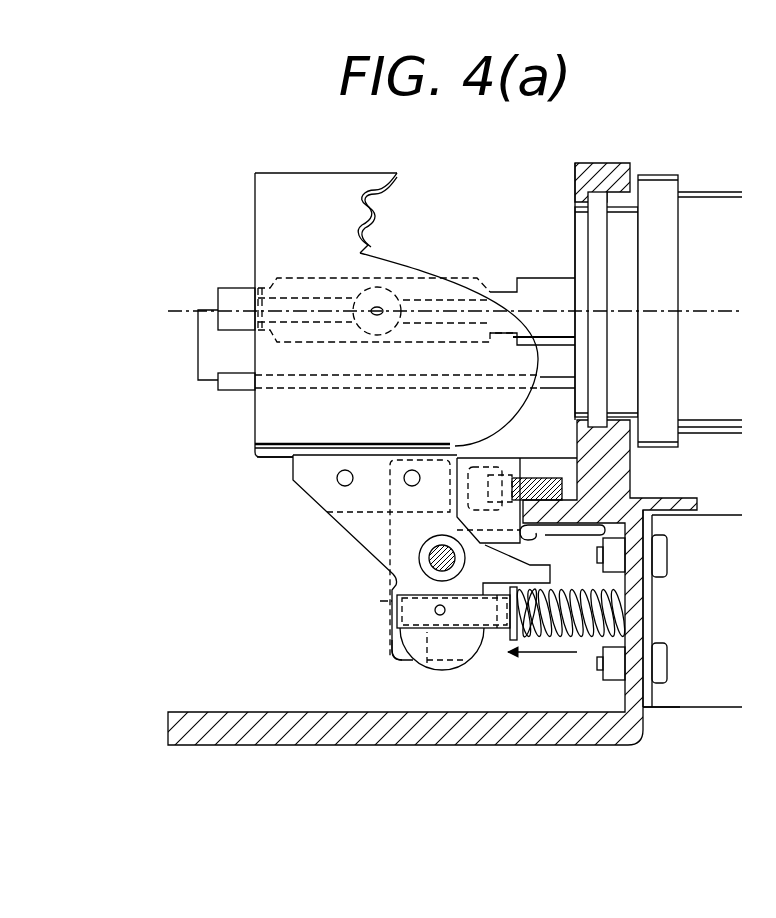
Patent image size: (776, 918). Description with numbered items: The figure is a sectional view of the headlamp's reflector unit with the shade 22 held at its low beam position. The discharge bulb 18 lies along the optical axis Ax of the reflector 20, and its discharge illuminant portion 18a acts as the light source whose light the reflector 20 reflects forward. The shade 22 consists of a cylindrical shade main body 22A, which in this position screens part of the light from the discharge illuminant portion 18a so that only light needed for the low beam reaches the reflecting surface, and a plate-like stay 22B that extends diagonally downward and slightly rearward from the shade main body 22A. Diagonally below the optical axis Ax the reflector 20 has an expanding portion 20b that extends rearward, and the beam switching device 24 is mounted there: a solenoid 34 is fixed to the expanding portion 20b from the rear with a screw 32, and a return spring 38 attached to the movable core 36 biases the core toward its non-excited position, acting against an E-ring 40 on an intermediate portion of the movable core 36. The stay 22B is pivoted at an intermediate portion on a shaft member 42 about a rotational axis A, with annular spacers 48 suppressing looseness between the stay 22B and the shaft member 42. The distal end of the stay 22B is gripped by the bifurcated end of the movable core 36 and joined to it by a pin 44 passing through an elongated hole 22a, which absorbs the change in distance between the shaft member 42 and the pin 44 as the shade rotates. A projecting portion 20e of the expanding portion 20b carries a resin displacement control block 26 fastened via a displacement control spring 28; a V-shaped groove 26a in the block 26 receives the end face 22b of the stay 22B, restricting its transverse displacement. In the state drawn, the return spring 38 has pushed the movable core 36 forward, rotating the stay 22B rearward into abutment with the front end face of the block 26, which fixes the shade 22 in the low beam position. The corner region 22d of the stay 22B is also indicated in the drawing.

The discharge bulb 18 is at (468, 274).
The discharge illuminant portion 18a is at (381, 306).
The optical axis Ax is at (183, 306).
The reflector 20 is at (460, 748).
The expanding portion 20b is at (640, 618).
The projecting portion 20e is at (553, 478).
The shade 22 is at (310, 496).
The shade main body 22A is at (275, 422).
The stay 22B is at (347, 520).
The elongated hole 22a is at (425, 663).
The end face 22b is at (462, 456).
The bracket corner 22d is at (394, 655).
The beam switching device 24 is at (658, 716).
The displacement control block 26 is at (505, 458).
The V-shaped groove 26a is at (390, 530).
The displacement control spring 28 is at (560, 538).
The screw 32 is at (668, 660).
The solenoid 34 is at (692, 695).
The movable core 36 is at (470, 632).
The return spring 38 is at (596, 648).
The E-ring 40 is at (513, 596).
The shaft member 42 is at (420, 572).
The pin 44 is at (436, 612).
The annular spacer 48 is at (430, 553).
The rotational axis A is at (387, 598).